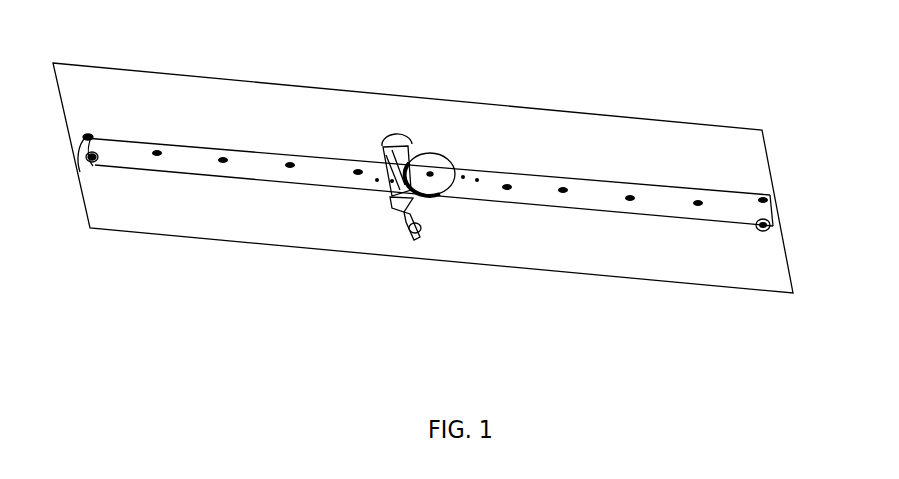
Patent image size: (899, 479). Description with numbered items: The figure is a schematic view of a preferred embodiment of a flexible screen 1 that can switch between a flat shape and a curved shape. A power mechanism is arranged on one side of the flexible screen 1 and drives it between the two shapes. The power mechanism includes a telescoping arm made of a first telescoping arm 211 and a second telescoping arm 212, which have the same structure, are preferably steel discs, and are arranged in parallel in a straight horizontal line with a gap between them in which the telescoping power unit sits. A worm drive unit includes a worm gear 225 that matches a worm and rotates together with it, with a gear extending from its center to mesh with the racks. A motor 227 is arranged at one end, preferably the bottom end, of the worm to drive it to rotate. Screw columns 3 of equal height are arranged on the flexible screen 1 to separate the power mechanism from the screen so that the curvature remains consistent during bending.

The flexible screen 1 is at (423, 147).
The screw columns 3 is at (114, 204).
The first telescoping arm 211 is at (438, 182).
The second telescoping arm 212 is at (451, 159).
The worm gear 225 is at (451, 155).
The motor 227 is at (441, 257).